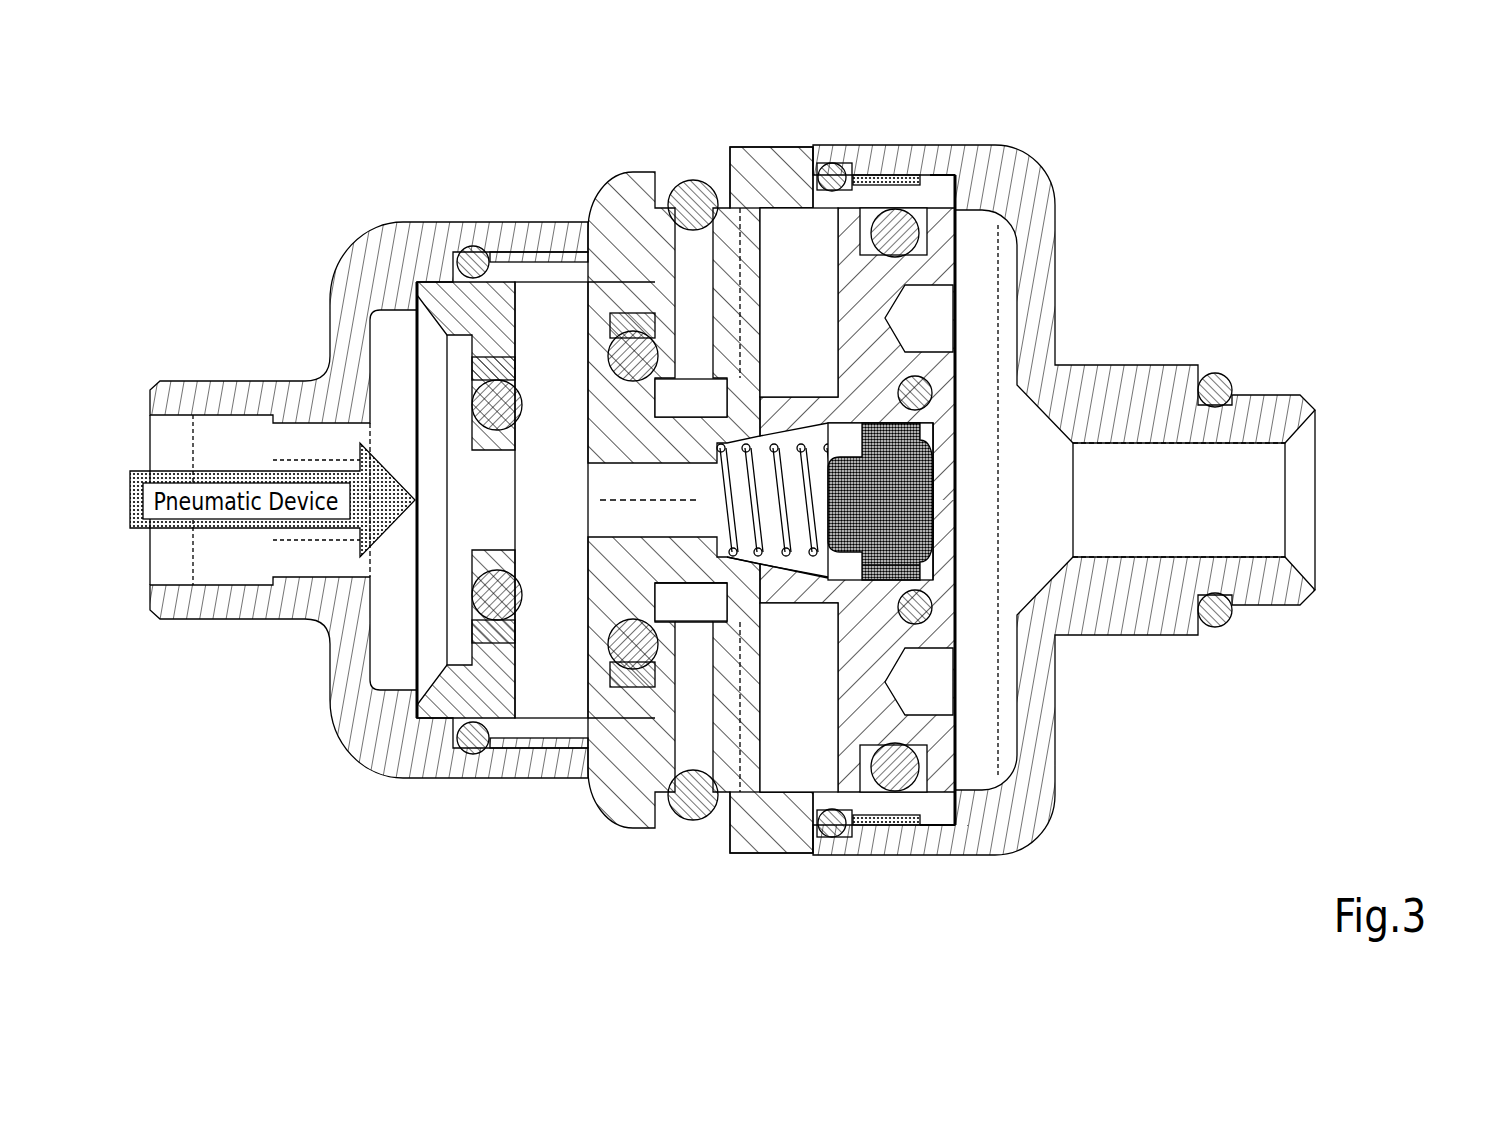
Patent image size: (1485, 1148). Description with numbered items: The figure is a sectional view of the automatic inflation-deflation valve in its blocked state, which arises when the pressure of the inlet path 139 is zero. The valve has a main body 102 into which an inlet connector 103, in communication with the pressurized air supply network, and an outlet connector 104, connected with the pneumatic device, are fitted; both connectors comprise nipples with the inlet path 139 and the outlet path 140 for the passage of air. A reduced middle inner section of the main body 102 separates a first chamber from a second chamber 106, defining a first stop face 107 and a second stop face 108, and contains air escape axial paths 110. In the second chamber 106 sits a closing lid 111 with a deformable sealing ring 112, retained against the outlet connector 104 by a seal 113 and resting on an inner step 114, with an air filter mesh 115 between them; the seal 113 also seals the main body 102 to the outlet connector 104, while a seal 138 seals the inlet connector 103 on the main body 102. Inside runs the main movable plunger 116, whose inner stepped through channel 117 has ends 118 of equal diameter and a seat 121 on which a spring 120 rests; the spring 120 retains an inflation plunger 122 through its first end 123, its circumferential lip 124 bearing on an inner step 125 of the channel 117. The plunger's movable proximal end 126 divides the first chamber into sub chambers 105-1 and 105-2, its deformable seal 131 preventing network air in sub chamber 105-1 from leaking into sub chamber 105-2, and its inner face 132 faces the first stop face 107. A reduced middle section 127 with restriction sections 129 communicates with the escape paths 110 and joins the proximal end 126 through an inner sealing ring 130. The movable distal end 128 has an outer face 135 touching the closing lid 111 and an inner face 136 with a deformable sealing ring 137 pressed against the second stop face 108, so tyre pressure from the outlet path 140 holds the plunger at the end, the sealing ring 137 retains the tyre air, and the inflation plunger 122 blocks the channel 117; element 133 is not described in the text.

The main body 102 is at (775, 178).
The inlet connector 103 is at (1037, 243).
The outlet connector 104 is at (360, 277).
The sub chamber 105-1 is at (1000, 250).
The sub chamber 105-2 is at (812, 233).
The second chamber 106 is at (540, 377).
The first stop face 107 is at (815, 177).
The second stop face 108 is at (640, 260).
The air escape axial paths 110 is at (693, 273).
The closing lid 111 is at (460, 625).
The deformable sealing ring 112 is at (493, 400).
The seal 113 is at (585, 505).
The inner step 114 is at (472, 747).
The air filter mesh 115 is at (430, 573).
The main movable plunger 116 is at (680, 595).
The inner stepped through channel 117 is at (630, 507).
The ends 118 is at (942, 500).
The spring 120 is at (788, 527).
The seat 121 is at (718, 446).
The inflation plunger 122 is at (882, 565).
The first end 123 is at (825, 495).
The circumferential lip 124 is at (940, 437).
The inner step 125 is at (933, 562).
The movable proximal end 126 is at (967, 237).
The reduced middle section 127 is at (807, 587).
The movable distal end 128 is at (605, 295).
The restriction sections 129 is at (740, 378).
The inner sealing ring 130 is at (928, 390).
The deformable seal 131 is at (930, 767).
The inner face 132 is at (835, 298).
The retaining plate 133 is at (953, 763).
The outer face 135 is at (587, 400).
The inner face 136 is at (658, 396).
The deformable sealing ring 137 is at (672, 583).
The seal 138 is at (830, 817).
The inlet paths 139 is at (1227, 503).
The outlet paths 140 is at (230, 547).